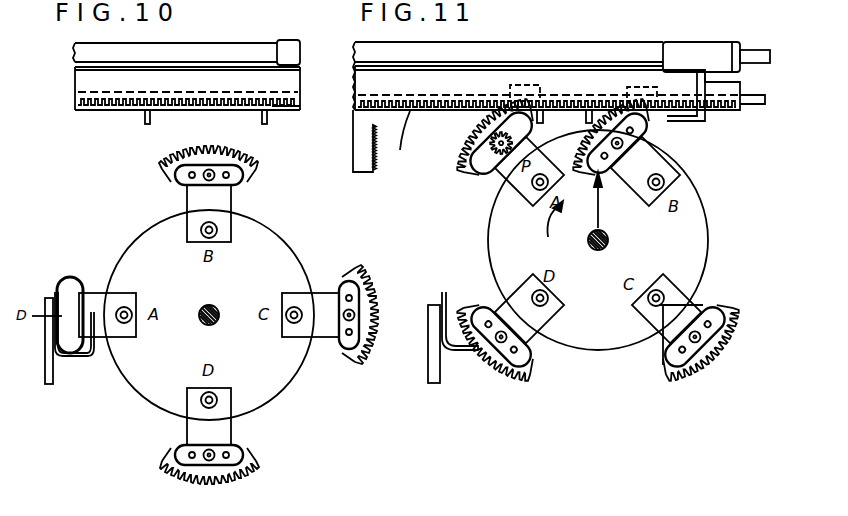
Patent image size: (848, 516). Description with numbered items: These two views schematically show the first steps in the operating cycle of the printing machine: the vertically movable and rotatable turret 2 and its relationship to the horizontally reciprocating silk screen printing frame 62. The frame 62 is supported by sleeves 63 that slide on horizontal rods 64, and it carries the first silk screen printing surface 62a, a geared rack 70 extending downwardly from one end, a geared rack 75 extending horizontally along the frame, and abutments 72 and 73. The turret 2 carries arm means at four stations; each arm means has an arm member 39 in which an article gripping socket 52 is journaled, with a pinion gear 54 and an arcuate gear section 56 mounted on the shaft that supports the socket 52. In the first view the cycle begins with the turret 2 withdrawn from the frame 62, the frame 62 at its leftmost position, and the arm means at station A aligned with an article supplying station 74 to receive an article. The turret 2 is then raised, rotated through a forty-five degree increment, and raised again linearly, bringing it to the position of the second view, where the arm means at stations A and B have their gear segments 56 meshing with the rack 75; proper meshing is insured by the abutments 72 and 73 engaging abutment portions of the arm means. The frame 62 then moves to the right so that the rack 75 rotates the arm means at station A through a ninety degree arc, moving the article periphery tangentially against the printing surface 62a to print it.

In FIG. 10, the turret 2 is at (135, 256).
In FIG. 11, the turret 2 is at (708, 236).
In FIG. 10, the arm member 39 is at (232, 208).
In FIG. 11, the arm member 39 is at (506, 185).
In FIG. 10, the article gripping socket 52 is at (175, 177).
In FIG. 11, the article gripping socket 52 is at (482, 178).
In FIG. 11, the pinion gear 54 is at (478, 136).
In FIG. 10, the arcuate gear section 56 is at (218, 150).
In FIG. 11, the arcuate gear section 56 is at (468, 170).
In FIG. 10, the silk screen frame 62 is at (75, 80).
In FIG. 11, the silk screen frame 62 is at (357, 83).
In FIG. 11, the first silk screen printing surface 62a is at (412, 138).
In FIG. 10, the sleeve 63 is at (292, 44).
In FIG. 11, the sleeve 63 is at (705, 50).
In FIG. 10, the horizontal rod 64 is at (218, 46).
In FIG. 11, the horizontal rod 64 is at (560, 46).
In FIG. 11, the geared rack 70 is at (368, 175).
In FIG. 10, the abutment 72 is at (146, 125).
In FIG. 11, the abutment 72 is at (550, 110).
In FIG. 10, the abutment 73 is at (268, 125).
In FIG. 11, the abutment 73 is at (640, 120).
In FIG. 10, the article supplying station 74 is at (78, 357).
In FIG. 11, the article supplying station 74 is at (472, 370).
In FIG. 10, the geared rack 75 is at (115, 103).
In FIG. 11, the geared rack 75 is at (452, 113).